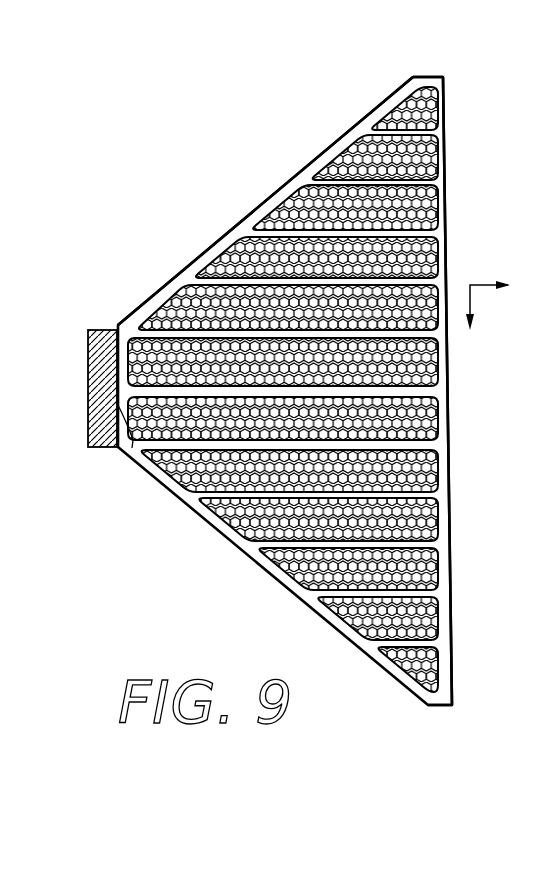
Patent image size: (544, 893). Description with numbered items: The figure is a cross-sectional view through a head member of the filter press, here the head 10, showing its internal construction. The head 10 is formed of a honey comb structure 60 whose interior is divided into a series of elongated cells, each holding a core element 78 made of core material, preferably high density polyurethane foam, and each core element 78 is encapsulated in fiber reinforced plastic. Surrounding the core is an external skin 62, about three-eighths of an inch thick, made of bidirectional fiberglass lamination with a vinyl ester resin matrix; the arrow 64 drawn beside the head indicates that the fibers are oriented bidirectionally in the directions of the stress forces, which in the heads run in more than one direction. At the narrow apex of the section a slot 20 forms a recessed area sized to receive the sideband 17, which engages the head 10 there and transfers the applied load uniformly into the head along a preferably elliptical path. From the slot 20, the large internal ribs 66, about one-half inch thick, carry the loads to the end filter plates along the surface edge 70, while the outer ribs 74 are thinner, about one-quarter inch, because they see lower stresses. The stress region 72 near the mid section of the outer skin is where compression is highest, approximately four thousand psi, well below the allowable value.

The head 10 is at (213, 210).
The sideband 17 is at (86, 330).
The slot 20 is at (133, 450).
The honey comb structure 60 is at (433, 112).
The external skin 62 is at (445, 257).
The arrow 64 is at (470, 290).
The large internal ribs 66 is at (440, 448).
The surface edge 70 is at (418, 77).
The stress region 72 is at (188, 420).
The outer ribs 74 is at (438, 228).
The core elements 78 is at (361, 120).